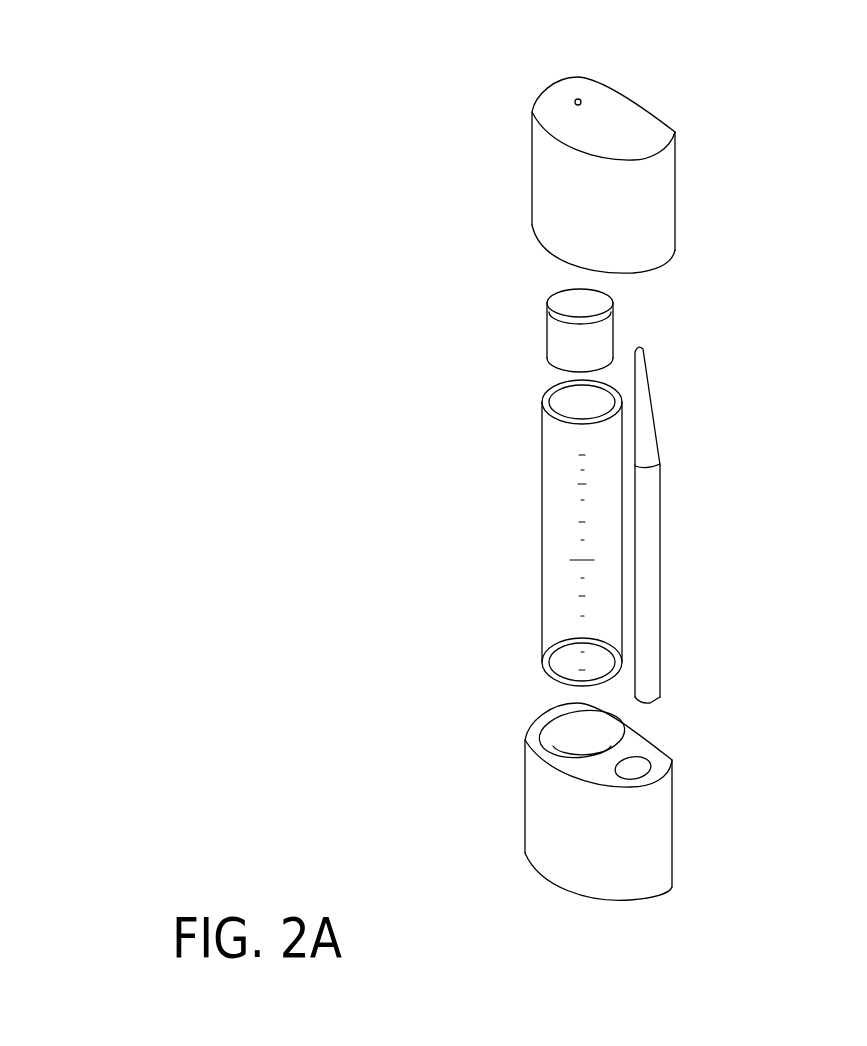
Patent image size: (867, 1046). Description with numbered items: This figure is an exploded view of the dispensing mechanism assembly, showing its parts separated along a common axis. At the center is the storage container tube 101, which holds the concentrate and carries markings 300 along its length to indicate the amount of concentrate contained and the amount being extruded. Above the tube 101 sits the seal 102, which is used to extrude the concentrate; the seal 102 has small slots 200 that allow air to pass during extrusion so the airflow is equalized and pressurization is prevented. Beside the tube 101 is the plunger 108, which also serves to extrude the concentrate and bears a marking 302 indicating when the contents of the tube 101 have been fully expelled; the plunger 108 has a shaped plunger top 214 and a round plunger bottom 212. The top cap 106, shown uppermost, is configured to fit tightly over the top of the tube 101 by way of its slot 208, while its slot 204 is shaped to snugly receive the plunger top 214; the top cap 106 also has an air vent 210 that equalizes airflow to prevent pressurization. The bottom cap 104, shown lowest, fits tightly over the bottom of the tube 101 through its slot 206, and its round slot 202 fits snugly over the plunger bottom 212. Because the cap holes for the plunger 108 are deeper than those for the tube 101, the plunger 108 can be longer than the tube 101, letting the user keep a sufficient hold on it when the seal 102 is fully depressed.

The storage container tube 101 is at (492, 533).
The seal 102 is at (601, 312).
The bottom cap 104 is at (601, 783).
The top cap 106 is at (601, 156).
The plunger 108 is at (737, 521).
The small slots 200 is at (616, 328).
The slot 202 is at (655, 763).
The slot 204 is at (680, 250).
The slot 206 is at (603, 733).
The slot 208 is at (535, 243).
The air vent 210 is at (583, 100).
The plunger bottom 212 is at (662, 697).
The plunger top 214 is at (657, 403).
The markings 300 is at (587, 635).
The marking 302 is at (661, 465).